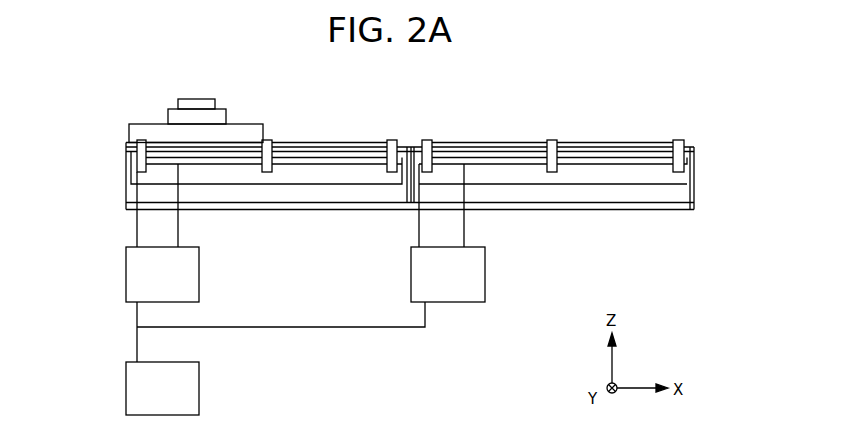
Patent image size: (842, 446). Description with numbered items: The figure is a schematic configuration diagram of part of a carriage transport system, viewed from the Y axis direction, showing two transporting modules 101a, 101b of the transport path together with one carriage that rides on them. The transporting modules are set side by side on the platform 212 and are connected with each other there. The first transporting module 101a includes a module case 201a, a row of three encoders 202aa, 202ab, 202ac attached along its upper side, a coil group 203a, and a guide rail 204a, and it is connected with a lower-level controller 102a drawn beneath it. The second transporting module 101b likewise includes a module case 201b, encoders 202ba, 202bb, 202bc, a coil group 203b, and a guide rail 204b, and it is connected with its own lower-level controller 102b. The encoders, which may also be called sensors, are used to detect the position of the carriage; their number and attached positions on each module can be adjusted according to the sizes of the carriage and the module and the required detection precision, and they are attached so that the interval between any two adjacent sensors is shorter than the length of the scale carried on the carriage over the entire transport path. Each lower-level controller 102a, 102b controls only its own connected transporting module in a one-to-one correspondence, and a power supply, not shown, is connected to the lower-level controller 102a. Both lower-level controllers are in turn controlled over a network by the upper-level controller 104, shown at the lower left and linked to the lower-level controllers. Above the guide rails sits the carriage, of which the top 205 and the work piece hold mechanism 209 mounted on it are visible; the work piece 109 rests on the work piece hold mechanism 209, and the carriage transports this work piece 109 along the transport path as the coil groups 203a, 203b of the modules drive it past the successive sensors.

The work piece 109 is at (205, 99).
The work piece hold mechanism 209 is at (168, 115).
The top 205 is at (129, 128).
The guide rail 204a is at (135, 144).
The guide rail 204b is at (641, 146).
The encoder 202aa is at (137, 158).
The encoder 202ab is at (268, 153).
The encoder 202ac is at (392, 156).
The encoder 202ba is at (428, 156).
The encoder 202bb is at (552, 156).
The encoder 202bc is at (685, 155).
The platform 212 is at (695, 211).
The module case 201a is at (306, 203).
The module case 201b is at (605, 203).
The coil group 203a is at (262, 185).
The coil group 203b is at (644, 190).
The lower-level controller 102a is at (126, 268).
The lower-level controller 102b is at (411, 268).
The upper-level controller 104 is at (126, 381).
The transporting module 101a is at (410, 213).
The transporting module 101b is at (693, 209).